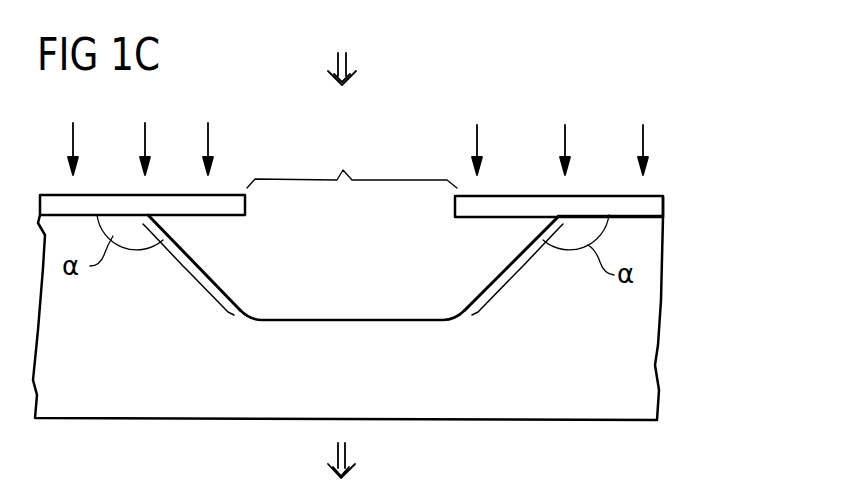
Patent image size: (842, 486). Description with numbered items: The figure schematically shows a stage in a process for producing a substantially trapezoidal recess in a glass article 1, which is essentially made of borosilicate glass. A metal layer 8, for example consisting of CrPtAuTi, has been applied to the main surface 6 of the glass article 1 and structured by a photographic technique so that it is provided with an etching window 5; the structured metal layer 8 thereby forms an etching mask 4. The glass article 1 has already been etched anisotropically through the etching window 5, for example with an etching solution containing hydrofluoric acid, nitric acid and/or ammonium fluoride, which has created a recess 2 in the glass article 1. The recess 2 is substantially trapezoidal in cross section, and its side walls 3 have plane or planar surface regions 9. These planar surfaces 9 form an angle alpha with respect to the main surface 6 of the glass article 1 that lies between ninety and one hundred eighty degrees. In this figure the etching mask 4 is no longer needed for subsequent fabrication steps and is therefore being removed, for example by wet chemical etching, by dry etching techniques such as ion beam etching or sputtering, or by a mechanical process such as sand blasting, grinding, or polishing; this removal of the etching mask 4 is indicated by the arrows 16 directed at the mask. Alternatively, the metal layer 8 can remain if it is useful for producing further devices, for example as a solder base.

The glass article 1 is at (663, 347).
The recess 2 is at (406, 294).
The side walls 3 is at (193, 256).
The etching mask 4 is at (648, 198).
The etching window 5 is at (352, 162).
The main surface 6 is at (606, 217).
The metal layer 8 is at (647, 208).
The planar surface regions 9 is at (353, 269).
The arrows 16 is at (73, 140).